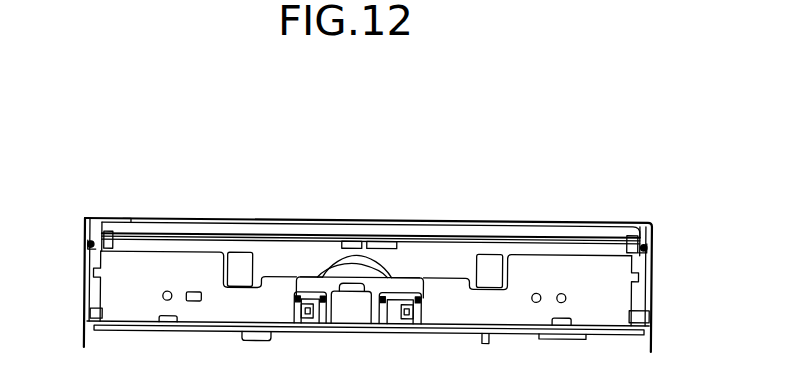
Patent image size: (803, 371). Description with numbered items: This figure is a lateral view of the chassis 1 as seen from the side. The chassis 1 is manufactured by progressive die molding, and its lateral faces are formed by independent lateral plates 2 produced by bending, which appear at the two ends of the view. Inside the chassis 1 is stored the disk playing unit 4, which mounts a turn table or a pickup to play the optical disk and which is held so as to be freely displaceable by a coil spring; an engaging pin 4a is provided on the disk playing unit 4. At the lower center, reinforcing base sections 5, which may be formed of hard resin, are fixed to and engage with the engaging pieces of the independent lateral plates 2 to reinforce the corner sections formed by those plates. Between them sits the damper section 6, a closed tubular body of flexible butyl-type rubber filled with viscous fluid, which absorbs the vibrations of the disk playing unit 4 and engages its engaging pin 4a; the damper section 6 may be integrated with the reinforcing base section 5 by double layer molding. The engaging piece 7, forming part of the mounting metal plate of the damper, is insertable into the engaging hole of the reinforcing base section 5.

The chassis 1 is at (546, 218).
The independent lateral plates 2 is at (85, 258).
The disk playing unit 4 is at (355, 268).
The engaging pin 4a is at (360, 277).
The reinforcing base section 5 is at (312, 312).
The damper section 6 is at (352, 291).
The engaging piece 7 is at (311, 301).